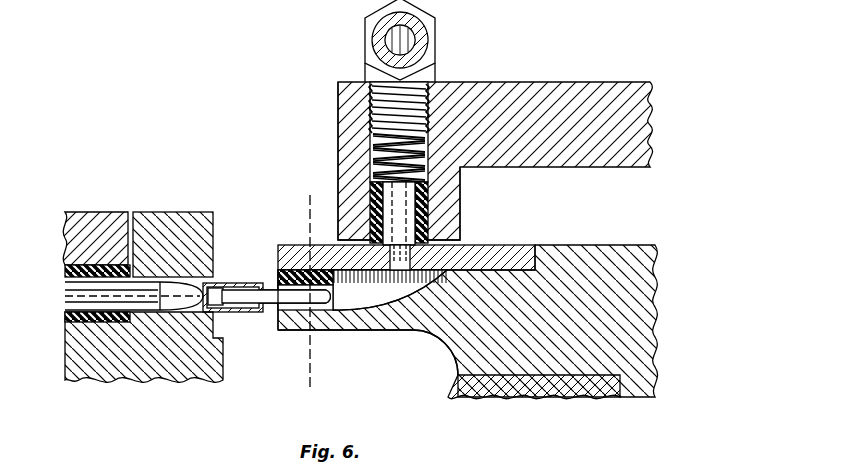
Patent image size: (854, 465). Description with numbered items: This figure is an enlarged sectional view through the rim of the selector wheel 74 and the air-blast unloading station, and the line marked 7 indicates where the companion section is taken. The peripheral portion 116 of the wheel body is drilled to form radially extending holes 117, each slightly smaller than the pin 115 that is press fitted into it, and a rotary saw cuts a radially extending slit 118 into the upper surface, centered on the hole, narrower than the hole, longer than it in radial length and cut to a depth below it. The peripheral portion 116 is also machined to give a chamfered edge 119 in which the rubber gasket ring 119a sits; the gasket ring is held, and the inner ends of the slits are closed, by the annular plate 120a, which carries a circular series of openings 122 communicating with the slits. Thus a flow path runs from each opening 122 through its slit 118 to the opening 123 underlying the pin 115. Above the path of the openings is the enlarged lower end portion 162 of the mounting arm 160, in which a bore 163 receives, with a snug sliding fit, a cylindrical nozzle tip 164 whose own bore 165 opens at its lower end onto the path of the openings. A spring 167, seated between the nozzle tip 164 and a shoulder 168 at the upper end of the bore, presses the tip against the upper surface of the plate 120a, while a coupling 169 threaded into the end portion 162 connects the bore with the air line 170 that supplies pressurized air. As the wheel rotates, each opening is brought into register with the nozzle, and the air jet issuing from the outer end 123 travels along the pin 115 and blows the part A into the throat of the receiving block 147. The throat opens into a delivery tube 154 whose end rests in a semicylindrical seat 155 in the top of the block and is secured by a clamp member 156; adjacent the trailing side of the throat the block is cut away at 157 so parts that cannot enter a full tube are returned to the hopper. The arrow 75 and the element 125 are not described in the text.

The air line 170 is at (428, 40).
The coupling 169 is at (432, 72).
The assembly direction arrow 75 is at (350, 64).
The mounting arm 160 is at (590, 86).
The enlarged lower end portion 162 is at (350, 106).
The shoulder 168 is at (432, 122).
The spring 167 is at (372, 160).
The bore of nozzle tip 165 is at (384, 200).
The bore 163 is at (430, 186).
The nozzle tip 164 is at (430, 199).
The openings 122 is at (446, 268).
The annular plate 120a is at (528, 247).
The selector wheel 74 is at (656, 270).
The base strip 125 is at (568, 396).
The chamfered edge 119 is at (336, 282).
The rubber gasket ring 119a is at (280, 272).
The slit 118 is at (407, 290).
The holes 117 is at (330, 330).
The peripheral portion 116 is at (374, 332).
The pins 115 is at (240, 310).
The opening 123 is at (282, 322).
The part A is at (243, 285).
The receiving block 147 is at (175, 378).
The clamp member 156 is at (104, 190).
The delivery tube 154 is at (68, 268).
The semicylindrical seat 155 is at (68, 320).
The cutaway 157 is at (183, 290).
The section line 7- 7 is at (300, 212).